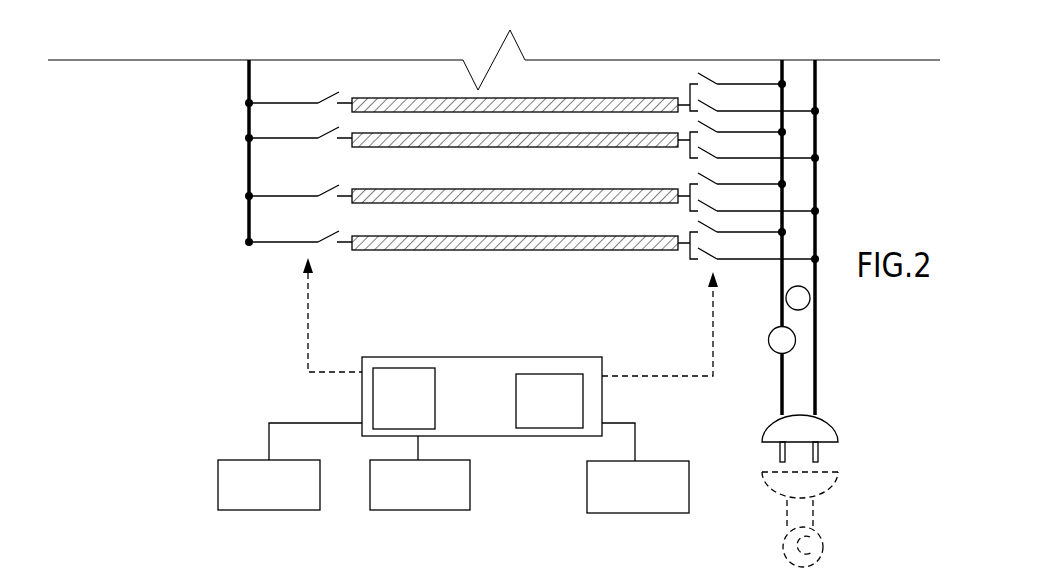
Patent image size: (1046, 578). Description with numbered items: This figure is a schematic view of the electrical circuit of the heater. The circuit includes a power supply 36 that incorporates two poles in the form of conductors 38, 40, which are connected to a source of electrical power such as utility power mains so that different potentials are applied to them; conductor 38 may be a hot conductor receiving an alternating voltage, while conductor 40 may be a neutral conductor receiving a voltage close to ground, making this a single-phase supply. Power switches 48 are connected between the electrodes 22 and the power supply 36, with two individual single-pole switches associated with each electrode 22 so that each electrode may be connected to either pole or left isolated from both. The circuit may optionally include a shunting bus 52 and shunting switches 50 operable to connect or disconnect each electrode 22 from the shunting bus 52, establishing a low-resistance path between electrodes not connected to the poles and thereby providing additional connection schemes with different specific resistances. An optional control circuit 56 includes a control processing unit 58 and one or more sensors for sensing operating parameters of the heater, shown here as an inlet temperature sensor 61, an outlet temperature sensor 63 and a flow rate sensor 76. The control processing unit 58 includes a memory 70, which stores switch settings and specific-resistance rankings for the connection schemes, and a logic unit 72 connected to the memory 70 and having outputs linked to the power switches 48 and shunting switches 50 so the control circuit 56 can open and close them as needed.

The electrode 22 is at (607, 98).
The power supply 36 is at (870, 343).
The hot conductor 38 is at (815, 238).
The neutral conductor 40 is at (771, 292).
The power switch 48 is at (713, 175).
The shunting switch 50 is at (322, 233).
The shunting bus 52 is at (247, 122).
The control circuit 56 is at (250, 397).
The control processing unit 58 is at (470, 357).
The inlet temperature sensor 61 is at (297, 510).
The outlet temperature sensor 63 is at (448, 510).
The memory 70 is at (413, 368).
The logic unit 72 is at (568, 374).
The flow rate sensor 76 is at (667, 513).